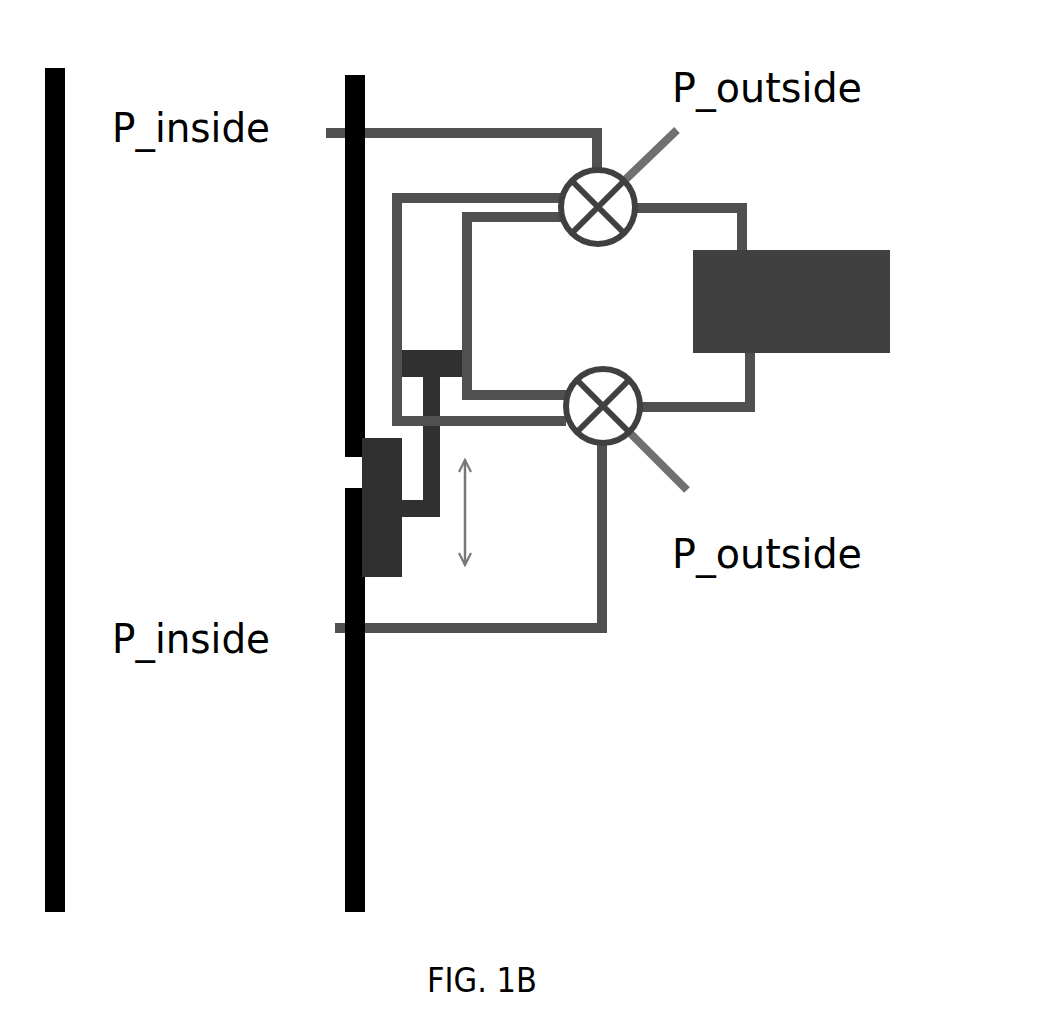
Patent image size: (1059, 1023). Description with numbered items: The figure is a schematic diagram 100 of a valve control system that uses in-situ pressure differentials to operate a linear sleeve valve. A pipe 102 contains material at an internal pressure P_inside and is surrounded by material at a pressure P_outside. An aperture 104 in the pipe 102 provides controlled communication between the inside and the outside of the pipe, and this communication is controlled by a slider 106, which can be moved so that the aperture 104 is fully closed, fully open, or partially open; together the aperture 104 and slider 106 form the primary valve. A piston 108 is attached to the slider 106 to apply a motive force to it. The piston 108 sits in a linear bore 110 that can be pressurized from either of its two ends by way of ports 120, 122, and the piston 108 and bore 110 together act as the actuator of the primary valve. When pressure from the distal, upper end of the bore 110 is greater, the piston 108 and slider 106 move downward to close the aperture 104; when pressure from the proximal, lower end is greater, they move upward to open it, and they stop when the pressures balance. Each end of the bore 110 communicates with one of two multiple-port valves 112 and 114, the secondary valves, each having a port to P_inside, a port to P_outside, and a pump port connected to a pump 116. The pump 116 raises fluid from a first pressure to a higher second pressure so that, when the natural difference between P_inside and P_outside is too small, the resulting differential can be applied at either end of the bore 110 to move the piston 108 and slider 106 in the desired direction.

The schematic diagram 100 is at (664, 690).
The pipe 102 is at (374, 726).
The aperture 104 is at (337, 474).
The slider 106 is at (407, 552).
The piston 108 is at (459, 357).
The linear bore 110 is at (436, 278).
The multiple-port valve 112 is at (649, 429).
The multiple-port valve 114 is at (606, 172).
The pump 116 is at (810, 249).
The port 120 is at (481, 199).
The port 122 is at (526, 406).